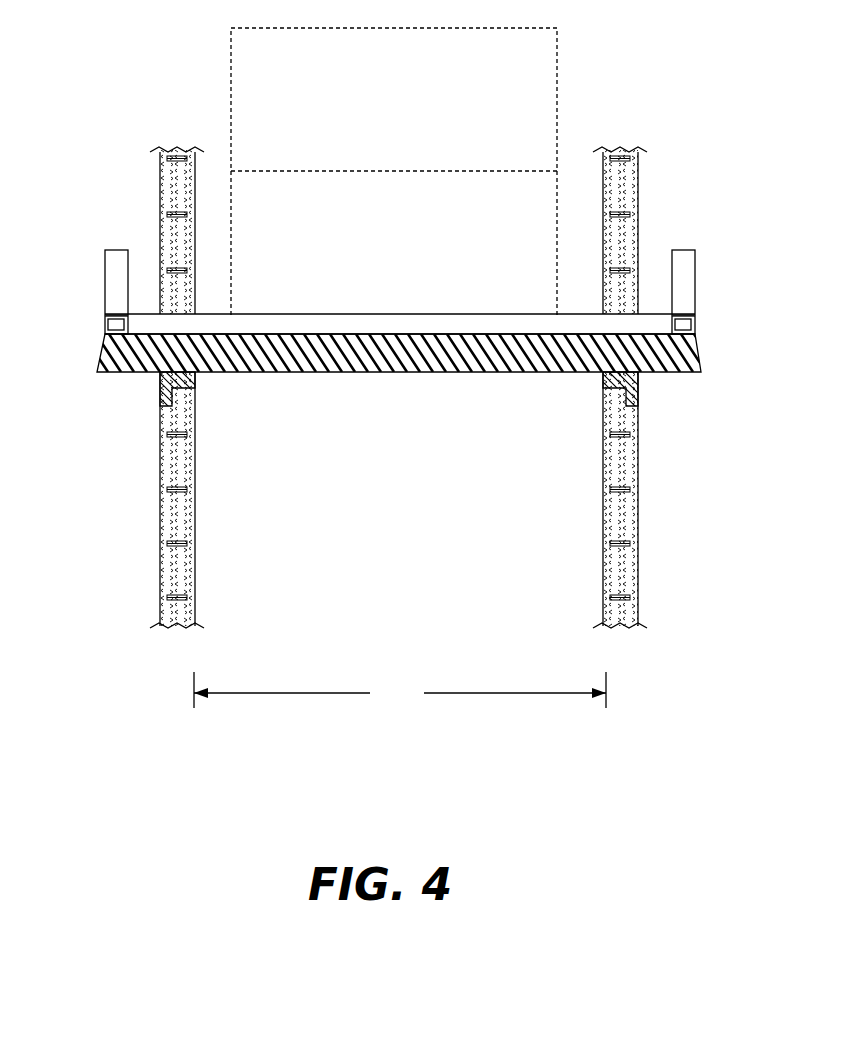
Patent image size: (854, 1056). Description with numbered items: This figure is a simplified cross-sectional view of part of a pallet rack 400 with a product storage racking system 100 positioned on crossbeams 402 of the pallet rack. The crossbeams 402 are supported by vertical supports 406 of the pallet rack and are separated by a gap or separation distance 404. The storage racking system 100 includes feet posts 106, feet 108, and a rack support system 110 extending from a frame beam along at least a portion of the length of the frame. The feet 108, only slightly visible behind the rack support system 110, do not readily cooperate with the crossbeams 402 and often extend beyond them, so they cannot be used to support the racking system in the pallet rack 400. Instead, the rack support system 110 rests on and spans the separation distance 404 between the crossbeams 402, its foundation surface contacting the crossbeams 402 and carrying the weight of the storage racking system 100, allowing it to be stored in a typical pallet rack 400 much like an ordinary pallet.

The product storage racking system 100 is at (90, 275).
The feet posts 106 is at (695, 272).
The feet 108 is at (100, 368).
The rack support system 110 is at (430, 367).
The pallet rack 400 is at (126, 150).
The crossbeams 402 is at (153, 393).
The separation distance 404 is at (400, 690).
The vertical supports 406 is at (167, 530).